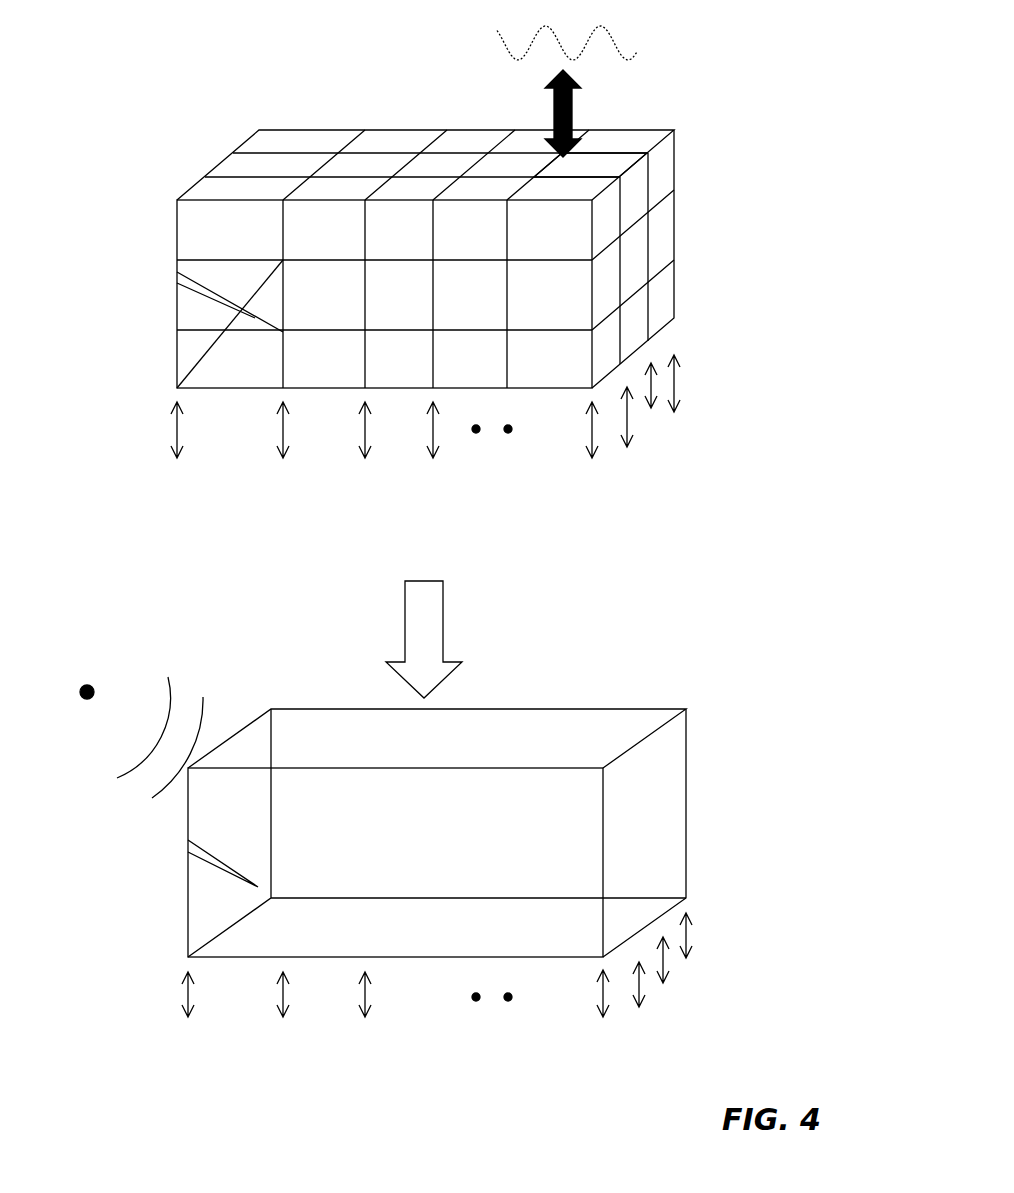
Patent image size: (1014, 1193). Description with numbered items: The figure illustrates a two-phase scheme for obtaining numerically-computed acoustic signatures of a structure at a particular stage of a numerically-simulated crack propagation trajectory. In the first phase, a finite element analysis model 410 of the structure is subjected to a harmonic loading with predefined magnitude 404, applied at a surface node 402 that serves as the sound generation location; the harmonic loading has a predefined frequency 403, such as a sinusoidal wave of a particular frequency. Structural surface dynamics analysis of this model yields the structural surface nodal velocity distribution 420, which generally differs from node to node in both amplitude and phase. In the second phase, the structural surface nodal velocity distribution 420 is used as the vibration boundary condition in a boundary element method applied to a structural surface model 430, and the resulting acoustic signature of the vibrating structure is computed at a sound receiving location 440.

The surface node 402 is at (575, 157).
The predefined frequency 403 is at (483, 44).
The harmonic loading with predefined magnitude 404 is at (545, 104).
The finite element analysis model 410 is at (419, 317).
The structural surface nodal velocity distribution 420 is at (177, 460).
The structural surface model 430 is at (500, 849).
The sound receiving location 440 is at (103, 677).